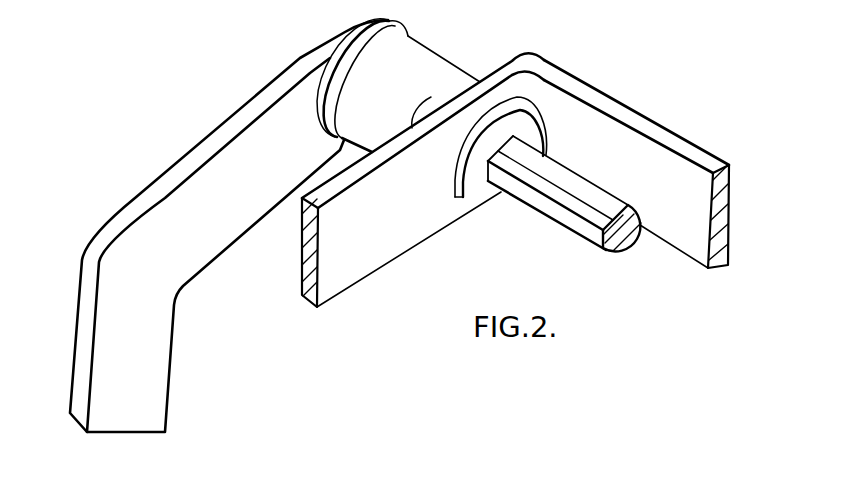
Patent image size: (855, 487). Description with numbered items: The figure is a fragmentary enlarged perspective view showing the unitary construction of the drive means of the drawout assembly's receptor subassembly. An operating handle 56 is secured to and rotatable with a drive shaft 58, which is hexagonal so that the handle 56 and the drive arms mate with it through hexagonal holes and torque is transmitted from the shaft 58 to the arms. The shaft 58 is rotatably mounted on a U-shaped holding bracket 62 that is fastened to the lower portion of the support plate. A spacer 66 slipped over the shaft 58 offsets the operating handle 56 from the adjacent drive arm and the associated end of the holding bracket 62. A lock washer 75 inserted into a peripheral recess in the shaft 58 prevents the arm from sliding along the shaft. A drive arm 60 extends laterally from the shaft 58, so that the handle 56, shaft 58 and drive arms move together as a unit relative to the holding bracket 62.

The operating handle 56 is at (213, 168).
The drive shaft 58 is at (573, 203).
The drive arm 60 is at (407, 240).
The holding bracket 62 is at (600, 97).
The spacer 66 is at (418, 58).
The lock washer 75 is at (473, 172).